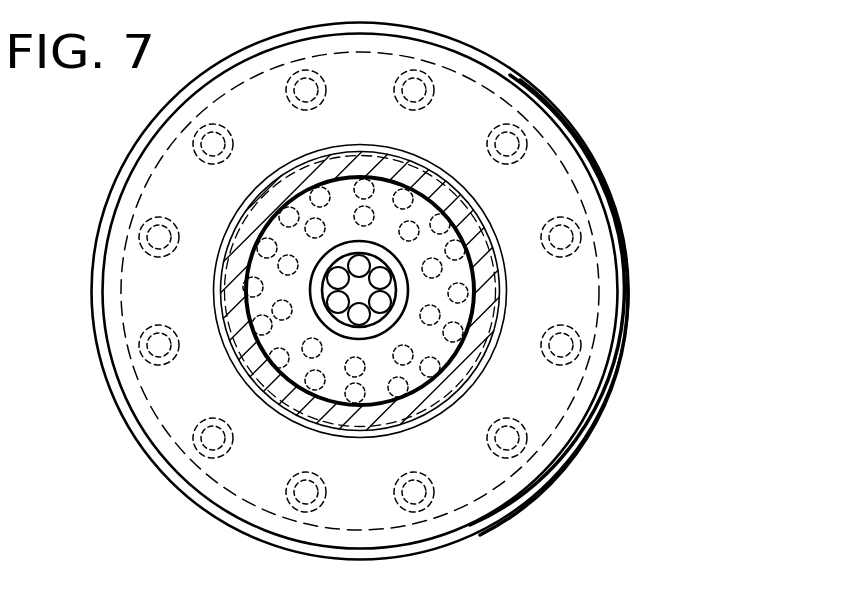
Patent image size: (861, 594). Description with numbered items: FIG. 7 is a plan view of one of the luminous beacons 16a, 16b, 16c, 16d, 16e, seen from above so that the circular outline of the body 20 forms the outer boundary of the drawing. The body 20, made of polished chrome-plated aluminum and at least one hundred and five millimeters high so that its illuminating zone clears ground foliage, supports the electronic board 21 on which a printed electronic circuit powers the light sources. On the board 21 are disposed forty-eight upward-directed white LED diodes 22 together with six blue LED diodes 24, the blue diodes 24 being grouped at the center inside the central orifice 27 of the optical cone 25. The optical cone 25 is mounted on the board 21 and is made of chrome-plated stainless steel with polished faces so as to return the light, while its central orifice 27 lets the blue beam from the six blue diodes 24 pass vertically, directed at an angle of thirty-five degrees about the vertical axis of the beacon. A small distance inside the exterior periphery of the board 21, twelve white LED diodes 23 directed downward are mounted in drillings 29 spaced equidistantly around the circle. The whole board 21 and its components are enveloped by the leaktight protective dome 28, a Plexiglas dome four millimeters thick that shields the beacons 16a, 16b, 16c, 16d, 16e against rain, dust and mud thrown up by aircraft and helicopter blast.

The luminous beacon 16a is at (438, 291).
The luminous beacon 16b is at (438, 291).
The luminous beacon 16c is at (438, 291).
The luminous beacon 16d is at (438, 291).
The luminous beacon 16e is at (438, 291).
The body 20 is at (608, 398).
The electronic board 21 is at (560, 427).
The white LED diodes 22 is at (253, 287).
The downward-directed LED diodes 23 is at (153, 247).
The blue LED diodes 24 is at (362, 318).
The optical cone 25 is at (443, 237).
The central orifice 27 is at (511, 398).
The leaktight protective dome 28 is at (247, 352).
The drillings 29 is at (305, 291).